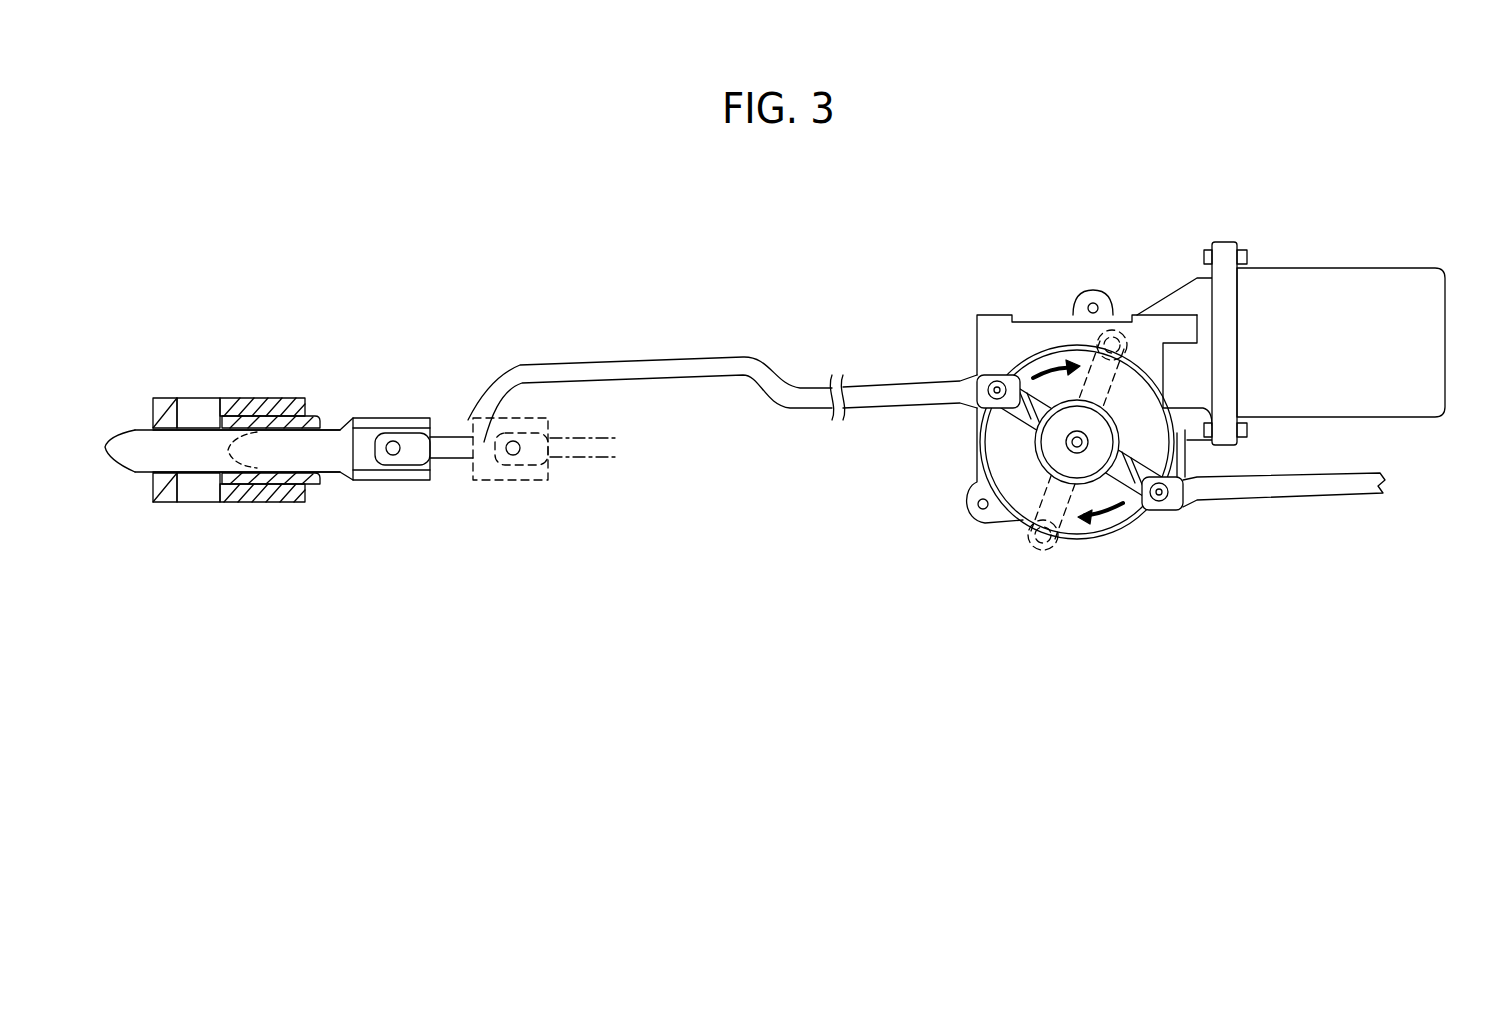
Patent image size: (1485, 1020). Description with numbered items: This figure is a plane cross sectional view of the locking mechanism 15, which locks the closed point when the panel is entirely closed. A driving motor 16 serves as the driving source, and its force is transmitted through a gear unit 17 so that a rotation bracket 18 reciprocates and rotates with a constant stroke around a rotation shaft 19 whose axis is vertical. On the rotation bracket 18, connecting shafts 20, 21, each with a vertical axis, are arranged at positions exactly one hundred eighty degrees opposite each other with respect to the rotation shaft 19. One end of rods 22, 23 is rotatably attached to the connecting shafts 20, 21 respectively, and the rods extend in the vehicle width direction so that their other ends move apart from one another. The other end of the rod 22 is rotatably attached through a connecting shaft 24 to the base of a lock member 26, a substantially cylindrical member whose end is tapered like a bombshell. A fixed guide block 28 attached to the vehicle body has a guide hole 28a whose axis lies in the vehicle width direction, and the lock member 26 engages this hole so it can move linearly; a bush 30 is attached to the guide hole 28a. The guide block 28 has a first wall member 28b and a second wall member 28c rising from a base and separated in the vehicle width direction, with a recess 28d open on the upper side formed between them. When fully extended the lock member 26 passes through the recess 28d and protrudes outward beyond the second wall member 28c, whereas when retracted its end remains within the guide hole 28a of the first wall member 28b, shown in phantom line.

The locking mechanism 15 is at (352, 568).
The driving motor 16 is at (1293, 282).
The gear unit 17 is at (1017, 517).
The rotation bracket 18 is at (1007, 443).
The rotation shaft 19 is at (1078, 447).
The connecting shaft 20 is at (995, 383).
The connecting shaft 21 is at (1160, 497).
The rod 22 is at (648, 365).
The rod 23 is at (1263, 497).
The connecting shaft 24 is at (393, 440).
The lock member 26 is at (318, 458).
The guide block 28 is at (315, 301).
The guide hole 28a is at (224, 471).
The first wall member 28b is at (270, 403).
The second wall member 28c is at (168, 405).
The recess 28d is at (200, 410).
The bush 30 is at (314, 418).